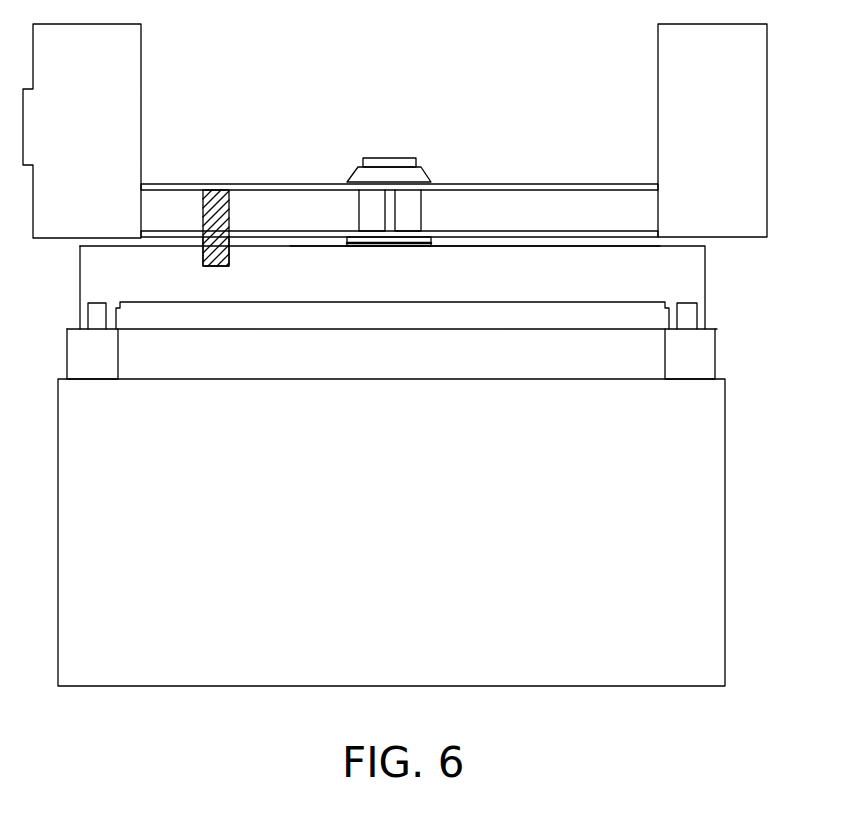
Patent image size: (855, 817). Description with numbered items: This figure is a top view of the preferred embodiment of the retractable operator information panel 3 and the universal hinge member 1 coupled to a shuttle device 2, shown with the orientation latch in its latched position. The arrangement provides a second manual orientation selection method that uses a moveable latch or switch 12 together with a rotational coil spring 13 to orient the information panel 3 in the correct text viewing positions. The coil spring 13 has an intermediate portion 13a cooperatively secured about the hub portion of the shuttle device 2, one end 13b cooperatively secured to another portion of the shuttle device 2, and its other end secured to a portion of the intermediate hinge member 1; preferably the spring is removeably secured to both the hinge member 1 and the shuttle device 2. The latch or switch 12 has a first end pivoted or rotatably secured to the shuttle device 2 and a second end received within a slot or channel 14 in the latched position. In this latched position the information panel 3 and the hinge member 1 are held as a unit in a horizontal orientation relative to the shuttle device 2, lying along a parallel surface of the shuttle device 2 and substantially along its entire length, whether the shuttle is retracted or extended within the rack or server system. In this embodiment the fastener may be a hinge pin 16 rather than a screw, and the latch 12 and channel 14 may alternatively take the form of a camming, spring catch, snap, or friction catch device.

The universal hinge member 1 is at (695, 279).
The shuttle device 2 is at (752, 87).
The retractable operator information panel 3 is at (717, 518).
The moveable latch or switch 12 is at (217, 193).
The rotational coil spring 13 is at (402, 243).
The intermediate portion of the coil spring 13a is at (495, 230).
The end of the coil spring 13b is at (295, 268).
The slot or channel 14 is at (201, 260).
The hinge pin 16 is at (391, 173).